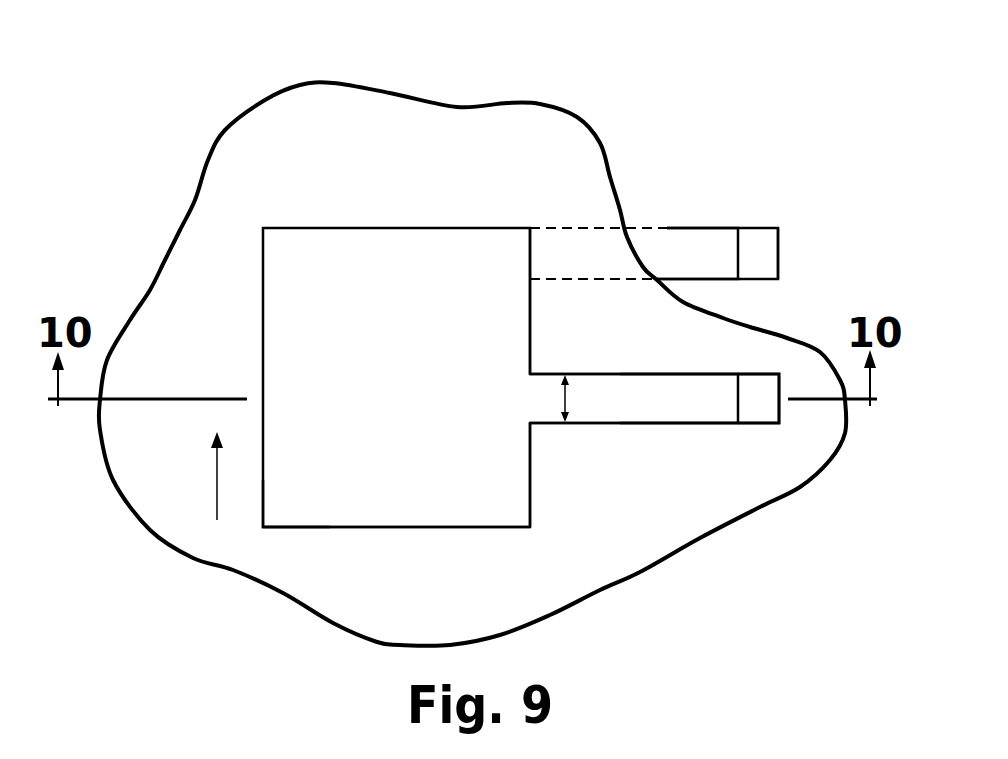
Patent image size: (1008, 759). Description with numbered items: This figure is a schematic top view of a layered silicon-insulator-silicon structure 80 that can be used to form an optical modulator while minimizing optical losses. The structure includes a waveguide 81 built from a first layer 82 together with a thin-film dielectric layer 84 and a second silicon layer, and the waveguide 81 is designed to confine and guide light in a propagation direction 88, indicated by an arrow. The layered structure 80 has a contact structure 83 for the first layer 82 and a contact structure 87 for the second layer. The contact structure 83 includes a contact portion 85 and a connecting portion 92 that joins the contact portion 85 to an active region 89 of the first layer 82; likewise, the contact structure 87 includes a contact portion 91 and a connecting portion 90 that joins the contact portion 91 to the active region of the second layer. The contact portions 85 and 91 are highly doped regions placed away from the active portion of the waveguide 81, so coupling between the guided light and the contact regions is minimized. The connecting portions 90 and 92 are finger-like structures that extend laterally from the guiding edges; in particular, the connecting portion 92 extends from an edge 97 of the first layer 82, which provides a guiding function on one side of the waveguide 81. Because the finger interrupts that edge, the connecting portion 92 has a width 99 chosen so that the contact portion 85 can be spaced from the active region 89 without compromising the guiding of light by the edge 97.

The layered silicon-insulator-silicon structure 80 is at (649, 151).
The waveguide 81 is at (385, 530).
The first layer 82 is at (283, 269).
The contact structure 83 is at (619, 398).
The thin-film dielectric layer 84 is at (583, 583).
The contact portion 85 is at (758, 412).
The contact structure 87 is at (693, 226).
The propagation direction 88 is at (215, 478).
The active region 89 is at (327, 497).
The connecting portion 90 is at (704, 262).
The contact portion 91 is at (765, 253).
The connecting portion 92 is at (697, 412).
The edge 97 is at (533, 326).
The width 99 is at (568, 399).